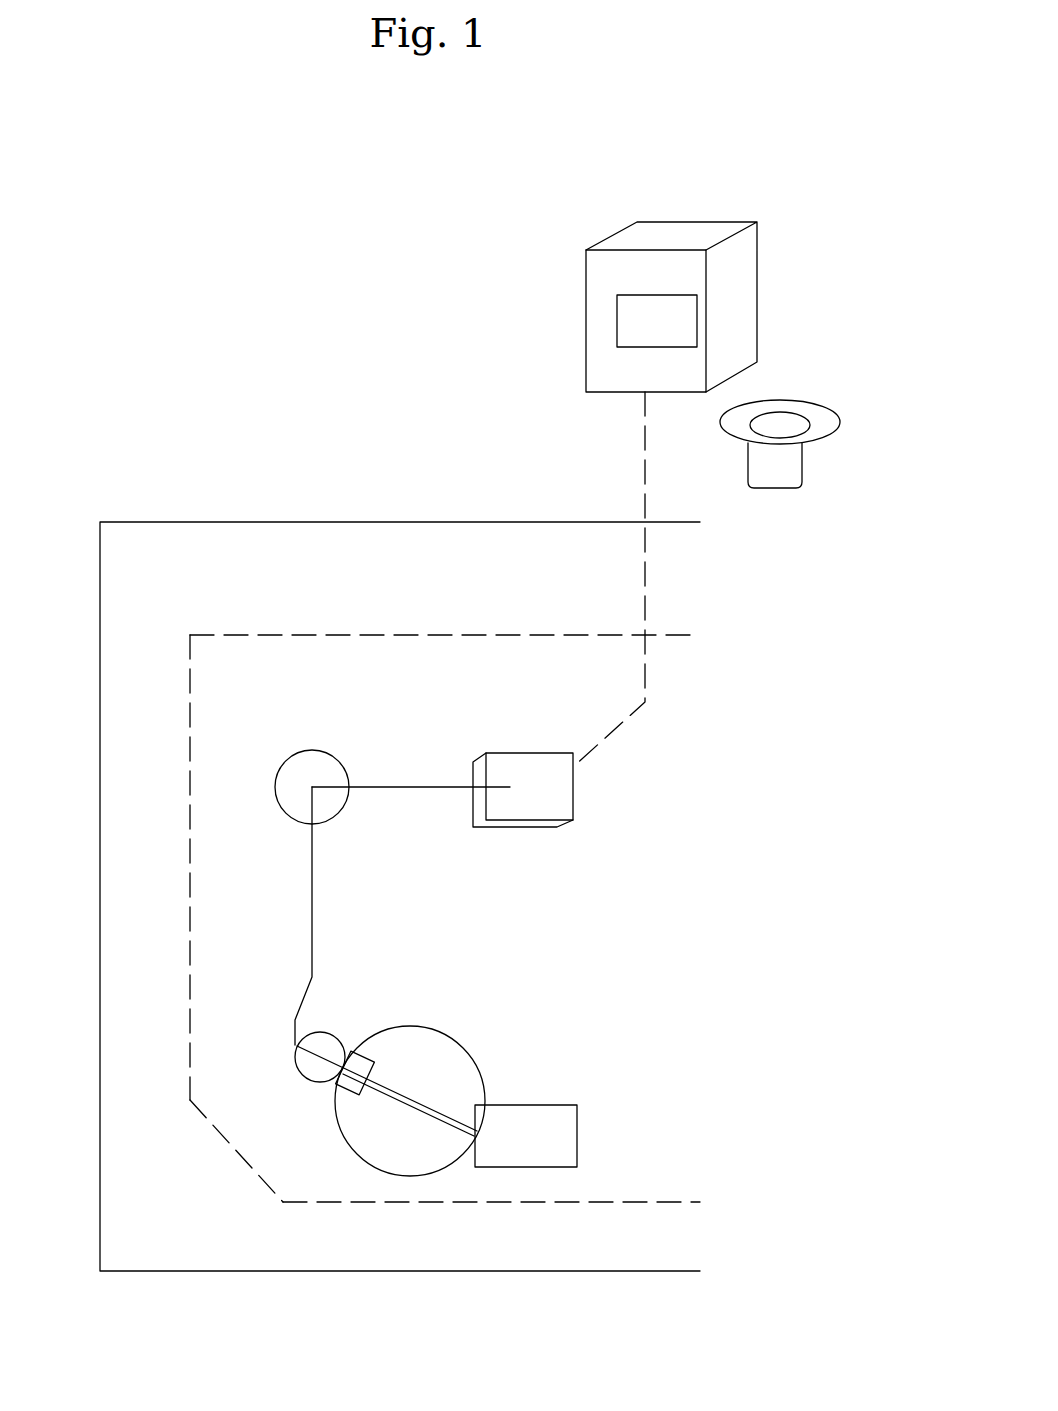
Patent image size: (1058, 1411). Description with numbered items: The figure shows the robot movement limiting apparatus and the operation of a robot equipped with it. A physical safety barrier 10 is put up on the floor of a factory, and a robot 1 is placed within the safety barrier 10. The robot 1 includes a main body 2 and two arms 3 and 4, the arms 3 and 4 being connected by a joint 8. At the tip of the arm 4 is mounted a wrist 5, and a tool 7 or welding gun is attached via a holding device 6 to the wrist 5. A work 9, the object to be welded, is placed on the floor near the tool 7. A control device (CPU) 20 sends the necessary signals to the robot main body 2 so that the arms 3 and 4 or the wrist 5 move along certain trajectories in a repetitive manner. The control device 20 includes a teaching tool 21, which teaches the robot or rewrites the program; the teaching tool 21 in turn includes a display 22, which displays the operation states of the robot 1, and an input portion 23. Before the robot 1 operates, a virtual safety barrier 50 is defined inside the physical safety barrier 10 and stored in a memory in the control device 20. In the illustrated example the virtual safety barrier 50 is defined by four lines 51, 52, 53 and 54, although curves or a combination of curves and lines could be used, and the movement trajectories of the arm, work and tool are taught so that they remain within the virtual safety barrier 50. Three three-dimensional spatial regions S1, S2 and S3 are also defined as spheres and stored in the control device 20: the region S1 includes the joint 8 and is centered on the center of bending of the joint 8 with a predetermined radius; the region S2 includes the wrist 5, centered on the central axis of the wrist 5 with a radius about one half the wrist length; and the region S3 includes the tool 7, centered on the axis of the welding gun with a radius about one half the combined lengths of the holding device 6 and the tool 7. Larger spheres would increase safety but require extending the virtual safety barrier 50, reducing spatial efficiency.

The robot 1 is at (555, 774).
The main body 2 is at (535, 765).
The arm 3 is at (421, 790).
The arm 4 is at (308, 905).
The wrist 5 is at (315, 1065).
The holding device 6 is at (365, 1062).
The tool 7 is at (413, 1105).
The joint 8 is at (320, 770).
The work 9 is at (568, 1122).
The physical safety barrier 10 is at (232, 1273).
The control device (CPU) 20 is at (572, 261).
The teaching tool 21 is at (828, 412).
The display 22 is at (780, 420).
The input portion 23 is at (785, 478).
The virtual safety barrier 50 is at (404, 906).
The line 51 is at (512, 633).
The line 52 is at (190, 722).
The line 53 is at (215, 1135).
The line 54 is at (625, 1205).
The three-dimensional spatial region S1 is at (321, 748).
The three-dimensional spatial region S2 is at (323, 1050).
The three-dimensional spatial region S3 is at (479, 1040).